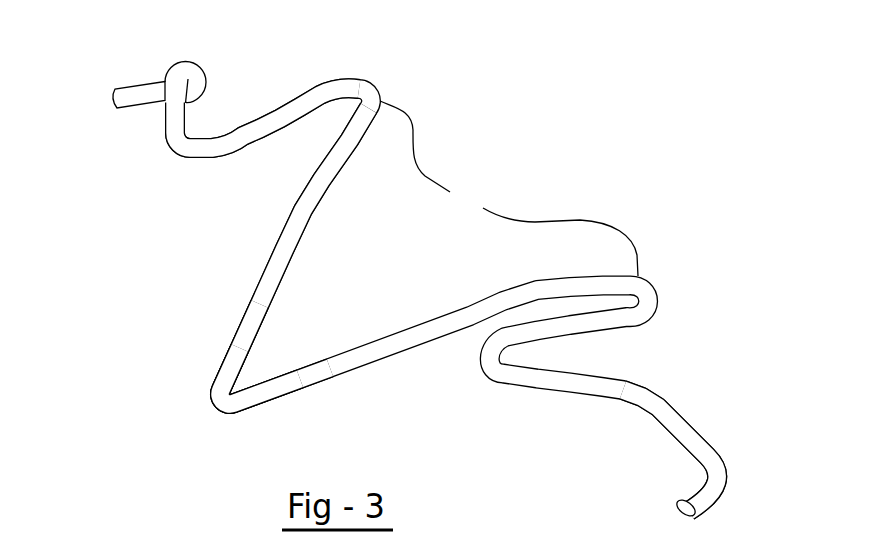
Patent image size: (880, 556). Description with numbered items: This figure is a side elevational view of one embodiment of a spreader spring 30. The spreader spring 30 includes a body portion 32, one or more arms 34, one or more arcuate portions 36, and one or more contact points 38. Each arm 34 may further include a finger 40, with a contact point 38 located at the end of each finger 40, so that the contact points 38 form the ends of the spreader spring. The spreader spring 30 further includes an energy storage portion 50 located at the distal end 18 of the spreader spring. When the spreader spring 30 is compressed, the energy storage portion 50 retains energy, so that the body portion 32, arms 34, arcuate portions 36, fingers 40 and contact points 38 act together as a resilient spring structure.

The spreader spring 30 is at (488, 88).
The body portion 32 is at (266, 267).
The arm 34 is at (274, 108).
The arcuate portion 36 is at (509, 188).
The contact point 38 is at (112, 100).
The finger 40 is at (715, 498).
The distal end 18 is at (211, 407).
The energy storage portion 50 is at (196, 379).